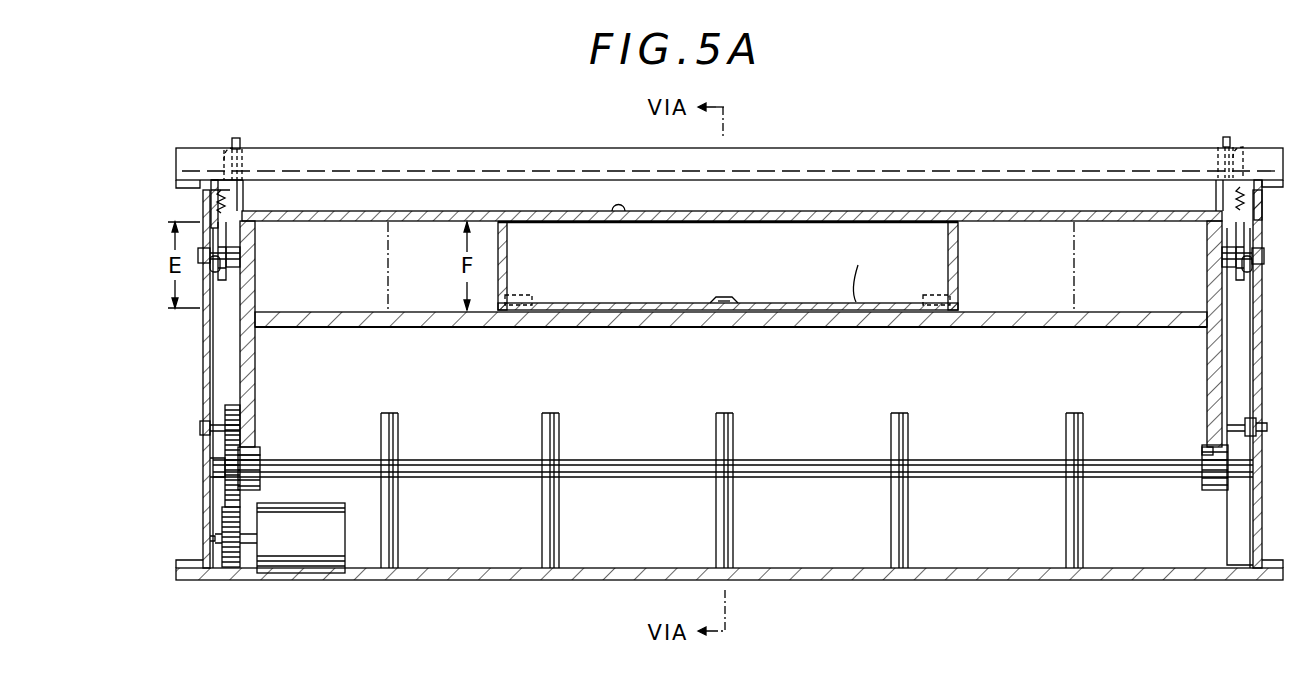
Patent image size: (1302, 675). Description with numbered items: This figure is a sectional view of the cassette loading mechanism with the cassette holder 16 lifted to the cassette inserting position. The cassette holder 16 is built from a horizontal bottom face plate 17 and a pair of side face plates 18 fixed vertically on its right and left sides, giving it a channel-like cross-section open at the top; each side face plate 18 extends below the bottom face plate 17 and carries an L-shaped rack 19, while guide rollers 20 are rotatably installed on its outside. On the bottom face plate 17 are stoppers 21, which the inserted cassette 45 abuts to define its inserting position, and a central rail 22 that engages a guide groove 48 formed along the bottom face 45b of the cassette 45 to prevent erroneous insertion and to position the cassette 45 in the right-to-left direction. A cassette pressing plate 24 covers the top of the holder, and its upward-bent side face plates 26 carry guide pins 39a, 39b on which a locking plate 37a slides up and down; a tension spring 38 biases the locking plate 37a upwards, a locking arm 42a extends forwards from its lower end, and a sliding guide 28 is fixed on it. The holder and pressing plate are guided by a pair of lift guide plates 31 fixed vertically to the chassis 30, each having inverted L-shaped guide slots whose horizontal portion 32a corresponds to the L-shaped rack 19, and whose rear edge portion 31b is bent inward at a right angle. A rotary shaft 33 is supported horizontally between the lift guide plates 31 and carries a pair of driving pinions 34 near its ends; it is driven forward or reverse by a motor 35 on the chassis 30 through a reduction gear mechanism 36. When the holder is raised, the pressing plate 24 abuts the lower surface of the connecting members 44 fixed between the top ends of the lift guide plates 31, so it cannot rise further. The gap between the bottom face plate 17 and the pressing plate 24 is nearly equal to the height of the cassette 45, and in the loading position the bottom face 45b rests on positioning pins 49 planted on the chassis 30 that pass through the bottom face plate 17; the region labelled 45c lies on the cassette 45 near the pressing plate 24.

The cassette holder 16 is at (805, 330).
The bottom face plate 17 is at (581, 328).
The side face plate 18 is at (256, 336).
The L-shaped rack 19 is at (256, 448).
The guide roller 20 is at (200, 268).
The stopper 21 is at (516, 306).
The rail 22 is at (724, 306).
The cassette pressing plate 24 is at (1107, 223).
The side face plate 26 is at (244, 206).
The sliding guide 28 is at (233, 268).
The chassis 30 is at (656, 568).
The lift guide plate 31 is at (203, 357).
The rear edge portion 31b is at (222, 372).
The horizontal portion 32a is at (198, 252).
The rotary shaft 33 is at (788, 462).
The driving pinion 34 is at (260, 462).
The motor 35 is at (322, 504).
The reduction gear mechanism 36 is at (297, 430).
The locking plate 37a is at (227, 250).
The tension spring 38 is at (213, 182).
The guide pin 39a is at (234, 138).
The guide pin 39b is at (216, 188).
The locking arm 42a is at (221, 263).
The connecting member 44 is at (1014, 160).
The cassette 45 is at (958, 280).
The bottom face 45b is at (860, 270).
The tray projection 45c is at (620, 213).
The guide groove 48 is at (724, 298).
The positioning pin 49 is at (399, 506).